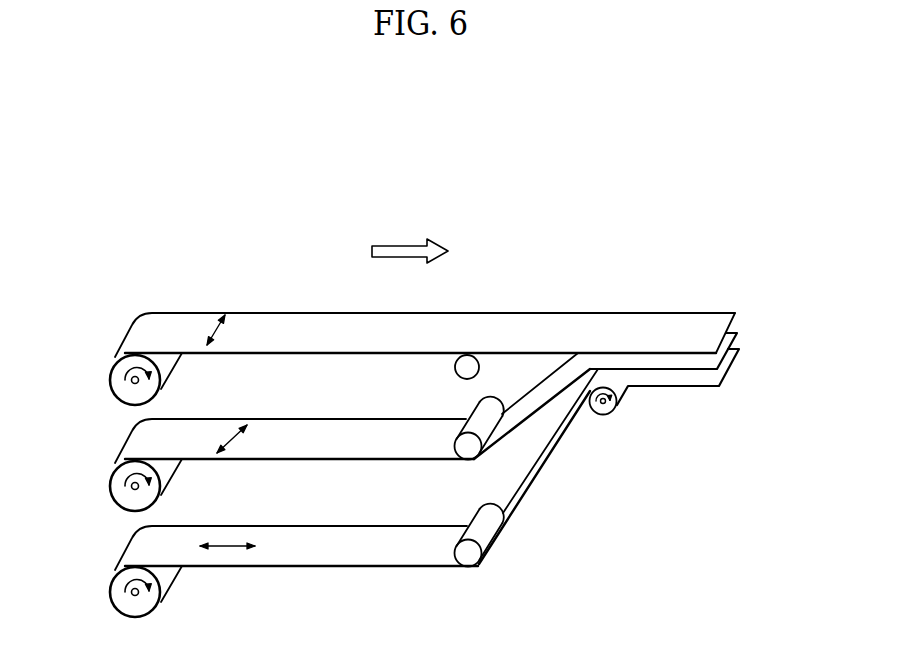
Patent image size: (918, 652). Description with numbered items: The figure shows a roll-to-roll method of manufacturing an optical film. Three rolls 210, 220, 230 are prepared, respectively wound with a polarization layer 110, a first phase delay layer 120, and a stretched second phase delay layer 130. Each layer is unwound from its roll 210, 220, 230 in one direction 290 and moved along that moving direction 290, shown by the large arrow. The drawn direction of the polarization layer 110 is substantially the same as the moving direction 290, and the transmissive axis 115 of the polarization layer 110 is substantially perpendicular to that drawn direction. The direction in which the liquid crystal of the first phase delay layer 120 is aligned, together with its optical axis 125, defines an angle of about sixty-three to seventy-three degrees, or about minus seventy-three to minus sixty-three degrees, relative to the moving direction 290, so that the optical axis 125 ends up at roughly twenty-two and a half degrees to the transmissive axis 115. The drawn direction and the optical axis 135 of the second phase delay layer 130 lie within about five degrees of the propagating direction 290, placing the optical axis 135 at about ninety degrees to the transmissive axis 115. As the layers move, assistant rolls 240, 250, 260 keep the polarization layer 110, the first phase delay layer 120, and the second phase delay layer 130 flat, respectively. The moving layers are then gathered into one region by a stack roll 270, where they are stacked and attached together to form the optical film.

The polarization layer 110 is at (735, 312).
The transmissive axis 115 is at (216, 331).
The first phase delay layer 120 is at (738, 333).
The optical axis 125 is at (247, 443).
The second phase delay layer 130 is at (738, 381).
The optical axis 135 is at (236, 548).
The roll 210 is at (108, 382).
The roll 220 is at (108, 488).
The roll 230 is at (108, 594).
The assistant roll 240 is at (458, 374).
The assistant roll 250 is at (463, 452).
The assistant roll 260 is at (465, 558).
The stack roll 270 is at (604, 414).
The moving direction 290 is at (385, 244).